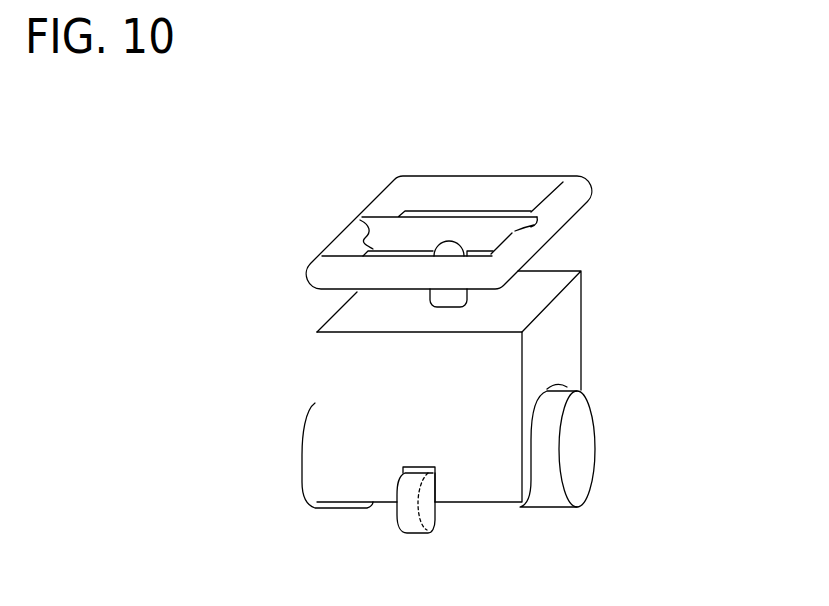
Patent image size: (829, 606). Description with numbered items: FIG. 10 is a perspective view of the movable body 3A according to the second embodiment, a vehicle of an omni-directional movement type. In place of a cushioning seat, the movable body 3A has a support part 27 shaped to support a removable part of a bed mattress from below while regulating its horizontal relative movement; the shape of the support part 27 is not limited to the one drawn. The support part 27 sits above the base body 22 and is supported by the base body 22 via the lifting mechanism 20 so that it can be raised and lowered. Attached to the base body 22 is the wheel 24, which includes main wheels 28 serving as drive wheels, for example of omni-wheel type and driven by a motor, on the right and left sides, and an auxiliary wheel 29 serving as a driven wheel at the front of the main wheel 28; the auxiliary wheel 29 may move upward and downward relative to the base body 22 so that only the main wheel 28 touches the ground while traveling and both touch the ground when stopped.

The movable body 3A is at (604, 146).
The support part 27 is at (477, 188).
The lifting mechanism 20 is at (439, 300).
The base body 22 is at (572, 330).
The wheel 24 is at (443, 477).
The main wheel 28 is at (309, 450).
The auxiliary wheel 29 is at (430, 510).